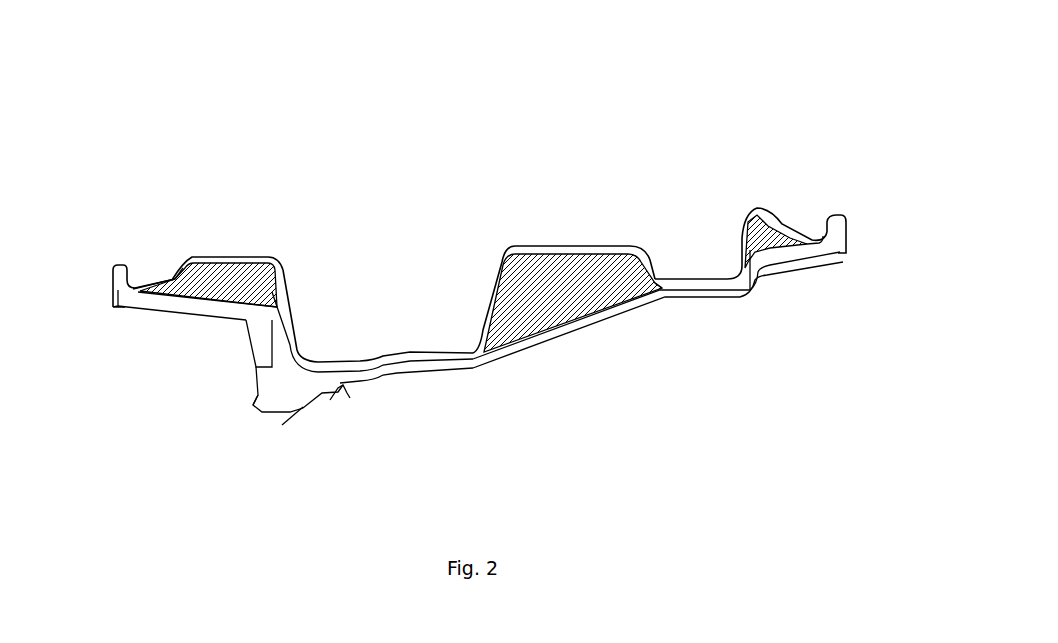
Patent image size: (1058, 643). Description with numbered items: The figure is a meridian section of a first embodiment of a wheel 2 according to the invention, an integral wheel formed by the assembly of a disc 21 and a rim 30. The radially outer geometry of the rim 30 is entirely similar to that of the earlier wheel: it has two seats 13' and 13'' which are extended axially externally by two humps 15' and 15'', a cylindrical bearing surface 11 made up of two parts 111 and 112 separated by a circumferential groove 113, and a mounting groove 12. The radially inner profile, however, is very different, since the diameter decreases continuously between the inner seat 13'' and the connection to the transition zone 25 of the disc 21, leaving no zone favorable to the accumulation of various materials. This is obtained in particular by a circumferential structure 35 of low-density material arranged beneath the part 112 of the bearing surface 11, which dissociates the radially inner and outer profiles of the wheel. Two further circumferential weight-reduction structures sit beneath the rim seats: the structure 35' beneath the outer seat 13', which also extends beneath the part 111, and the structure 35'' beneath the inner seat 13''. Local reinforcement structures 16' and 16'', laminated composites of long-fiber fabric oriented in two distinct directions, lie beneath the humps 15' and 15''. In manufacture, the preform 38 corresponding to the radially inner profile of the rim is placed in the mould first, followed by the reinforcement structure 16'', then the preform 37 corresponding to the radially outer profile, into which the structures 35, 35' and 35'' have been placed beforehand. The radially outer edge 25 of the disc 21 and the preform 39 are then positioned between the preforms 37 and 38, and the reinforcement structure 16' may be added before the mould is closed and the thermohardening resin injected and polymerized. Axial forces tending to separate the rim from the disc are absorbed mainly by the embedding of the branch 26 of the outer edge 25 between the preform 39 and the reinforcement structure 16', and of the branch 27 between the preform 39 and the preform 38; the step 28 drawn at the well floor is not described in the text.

The wheel 2 is at (667, 392).
The bearing surface 11 is at (363, 240).
The mounting groove 12 is at (683, 265).
The outer seat 13' is at (158, 234).
The inner seat 13'' is at (784, 178).
The hump 15' is at (83, 243).
The hump 15'' is at (858, 192).
The local reinforcement structure 16' is at (139, 318).
The local reinforcement structure 16'' is at (819, 281).
The disc 21 is at (242, 425).
The radially outer edge 25 is at (283, 393).
The branch 26 is at (270, 337).
The branch 27 is at (343, 383).
The step 28 is at (387, 368).
The rim 30 is at (534, 128).
The circumferential structure 35 is at (573, 340).
The circumferential weight-reduction structure 35' is at (236, 268).
The circumferential weight-reduction structure 35'' is at (762, 314).
The preform 37 is at (745, 240).
The preform 38 is at (622, 310).
The preform 39 is at (227, 308).
The part of the cylindrical surface 111 is at (259, 250).
The part of the cylindrical surface 112 is at (582, 242).
The circumferential groove 113 is at (393, 345).